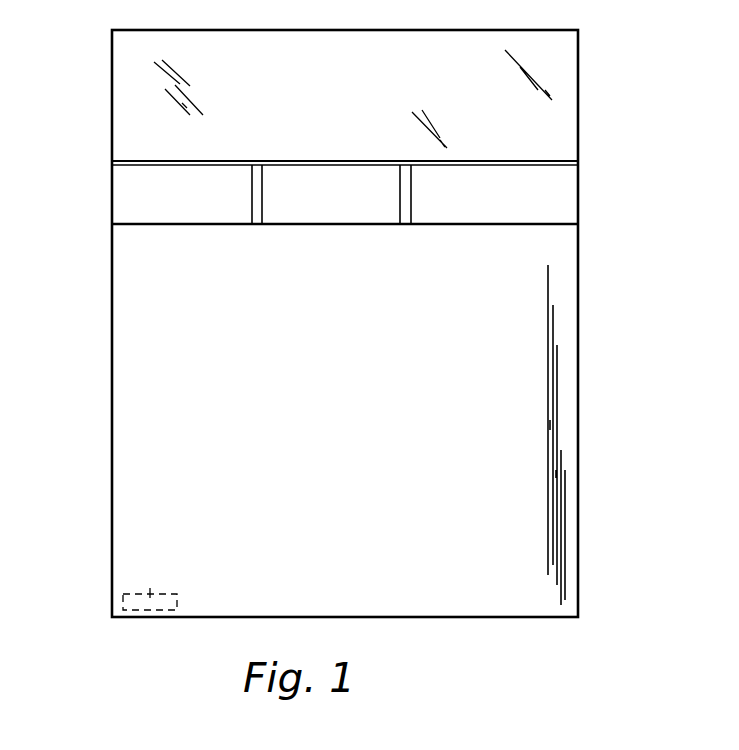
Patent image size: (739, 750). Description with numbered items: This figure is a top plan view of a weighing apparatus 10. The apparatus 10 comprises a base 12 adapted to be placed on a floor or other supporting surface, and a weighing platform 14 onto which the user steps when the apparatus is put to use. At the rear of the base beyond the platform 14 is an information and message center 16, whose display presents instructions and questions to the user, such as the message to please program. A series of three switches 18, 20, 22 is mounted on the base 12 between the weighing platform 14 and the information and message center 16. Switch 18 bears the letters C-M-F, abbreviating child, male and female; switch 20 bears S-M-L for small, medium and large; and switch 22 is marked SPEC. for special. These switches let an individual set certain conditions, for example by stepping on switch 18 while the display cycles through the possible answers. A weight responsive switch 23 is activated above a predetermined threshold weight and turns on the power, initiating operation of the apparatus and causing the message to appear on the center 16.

The apparatus 10 is at (578, 32).
The base 12 is at (580, 198).
The weighing platform 14 is at (562, 432).
The information and message center 16 is at (568, 97).
The switch 18 is at (178, 222).
The switch 20 is at (324, 222).
The switch 22 is at (449, 224).
The weight responsive switch 23 is at (150, 585).